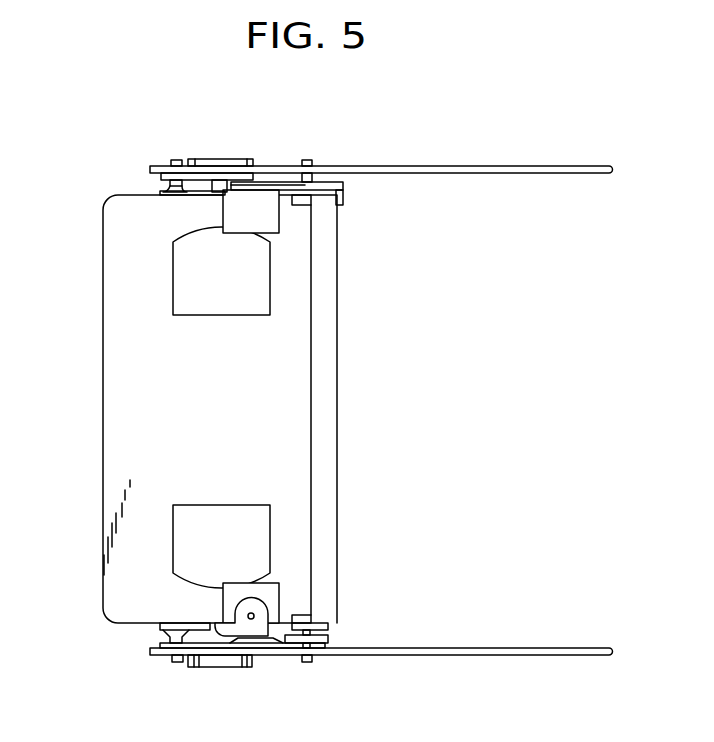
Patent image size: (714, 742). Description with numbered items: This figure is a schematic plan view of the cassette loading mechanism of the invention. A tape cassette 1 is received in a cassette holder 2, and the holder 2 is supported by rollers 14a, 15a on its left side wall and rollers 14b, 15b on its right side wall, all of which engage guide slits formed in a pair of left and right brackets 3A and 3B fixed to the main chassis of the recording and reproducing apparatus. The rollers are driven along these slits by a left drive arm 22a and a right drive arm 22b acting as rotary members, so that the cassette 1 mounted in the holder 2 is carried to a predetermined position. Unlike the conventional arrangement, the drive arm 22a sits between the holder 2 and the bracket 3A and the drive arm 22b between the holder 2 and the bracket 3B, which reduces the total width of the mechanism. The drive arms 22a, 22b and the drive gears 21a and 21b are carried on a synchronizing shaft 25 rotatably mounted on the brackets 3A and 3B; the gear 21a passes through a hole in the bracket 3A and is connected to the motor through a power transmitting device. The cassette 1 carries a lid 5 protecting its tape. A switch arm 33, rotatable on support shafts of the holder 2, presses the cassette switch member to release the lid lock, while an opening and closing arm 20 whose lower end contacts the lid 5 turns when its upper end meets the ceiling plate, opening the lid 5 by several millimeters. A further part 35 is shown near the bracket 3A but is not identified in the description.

The tape cassette 1 is at (103, 378).
The cassette holder 2 is at (264, 200).
The left bracket 3A is at (480, 165).
The right bracket 3B is at (533, 656).
The lid 5 is at (337, 362).
The roller 14a is at (174, 158).
The roller 14b is at (177, 664).
The roller 15a is at (306, 158).
The roller 15b is at (306, 663).
The opening and closing arm 20 is at (328, 639).
The gear 21a is at (237, 158).
The drive gear 21b is at (242, 668).
The left drive arm 22a is at (162, 181).
The right drive arm 22b is at (160, 642).
The shaft 25 is at (204, 668).
The switch arm 33 is at (268, 612).
The hook 35 is at (342, 200).